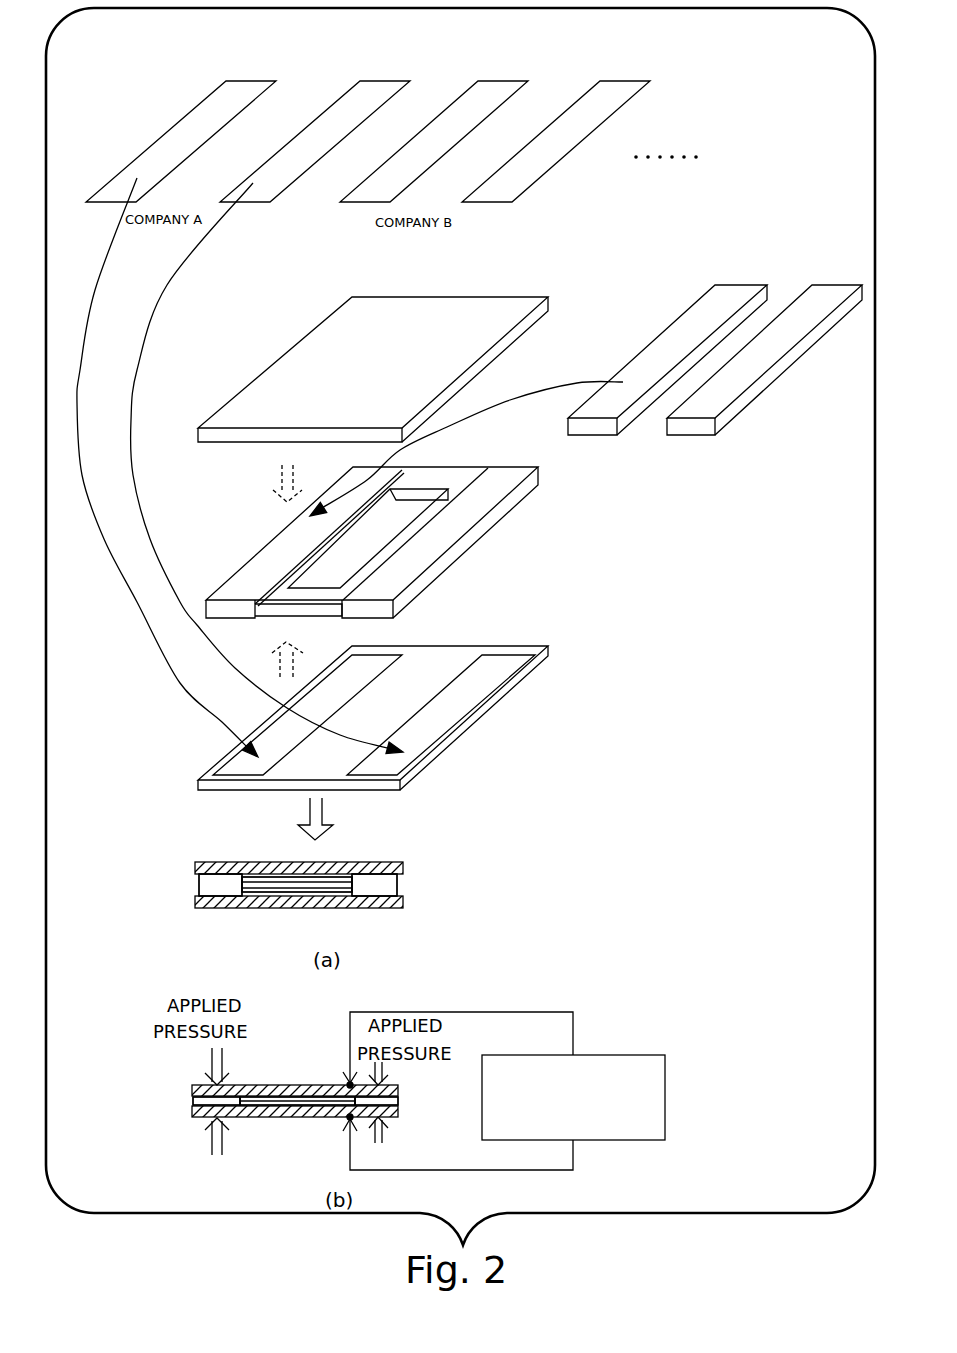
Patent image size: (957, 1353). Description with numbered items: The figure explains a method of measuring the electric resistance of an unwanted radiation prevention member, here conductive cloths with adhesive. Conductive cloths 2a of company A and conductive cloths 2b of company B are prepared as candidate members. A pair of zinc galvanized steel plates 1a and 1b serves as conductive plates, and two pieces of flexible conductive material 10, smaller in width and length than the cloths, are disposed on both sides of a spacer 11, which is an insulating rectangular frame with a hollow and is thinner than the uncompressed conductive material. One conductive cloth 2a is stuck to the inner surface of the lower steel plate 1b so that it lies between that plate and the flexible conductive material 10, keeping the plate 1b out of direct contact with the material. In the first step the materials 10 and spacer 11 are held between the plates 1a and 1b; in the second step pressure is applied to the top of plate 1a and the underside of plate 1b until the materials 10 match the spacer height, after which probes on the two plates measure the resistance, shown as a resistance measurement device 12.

The electrode of company A 2a is at (245, 88).
The electrode of company B 2b is at (488, 88).
The upper substrate 1a is at (463, 385).
The lower substrate 1b is at (463, 727).
The spacer 11 is at (440, 478).
The conductive strips 10 is at (600, 437).
The resistance measurement device 12 is at (620, 1055).